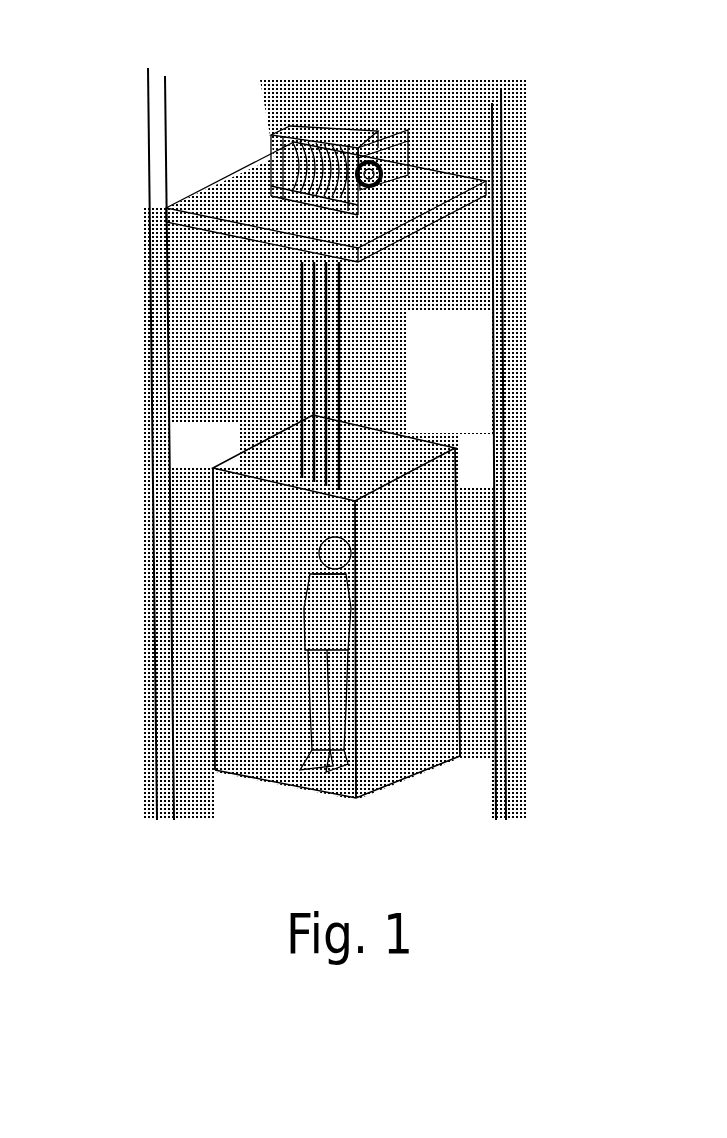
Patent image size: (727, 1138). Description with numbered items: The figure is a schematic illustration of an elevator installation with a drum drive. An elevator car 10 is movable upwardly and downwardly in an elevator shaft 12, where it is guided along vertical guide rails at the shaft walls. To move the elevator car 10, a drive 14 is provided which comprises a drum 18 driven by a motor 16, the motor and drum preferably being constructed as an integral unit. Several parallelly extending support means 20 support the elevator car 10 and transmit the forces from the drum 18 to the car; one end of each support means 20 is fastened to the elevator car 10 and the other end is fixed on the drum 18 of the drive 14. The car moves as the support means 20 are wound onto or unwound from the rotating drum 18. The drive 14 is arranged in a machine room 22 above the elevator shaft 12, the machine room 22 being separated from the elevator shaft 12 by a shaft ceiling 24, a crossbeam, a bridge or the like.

The elevator car 10 is at (428, 625).
The elevator shaft 12 is at (186, 341).
The drive 14 is at (397, 111).
The motor 16 is at (343, 103).
The drum 18 is at (319, 169).
The support means 20 is at (323, 350).
The machine room 22 is at (168, 155).
The shaft ceiling 24 is at (200, 216).